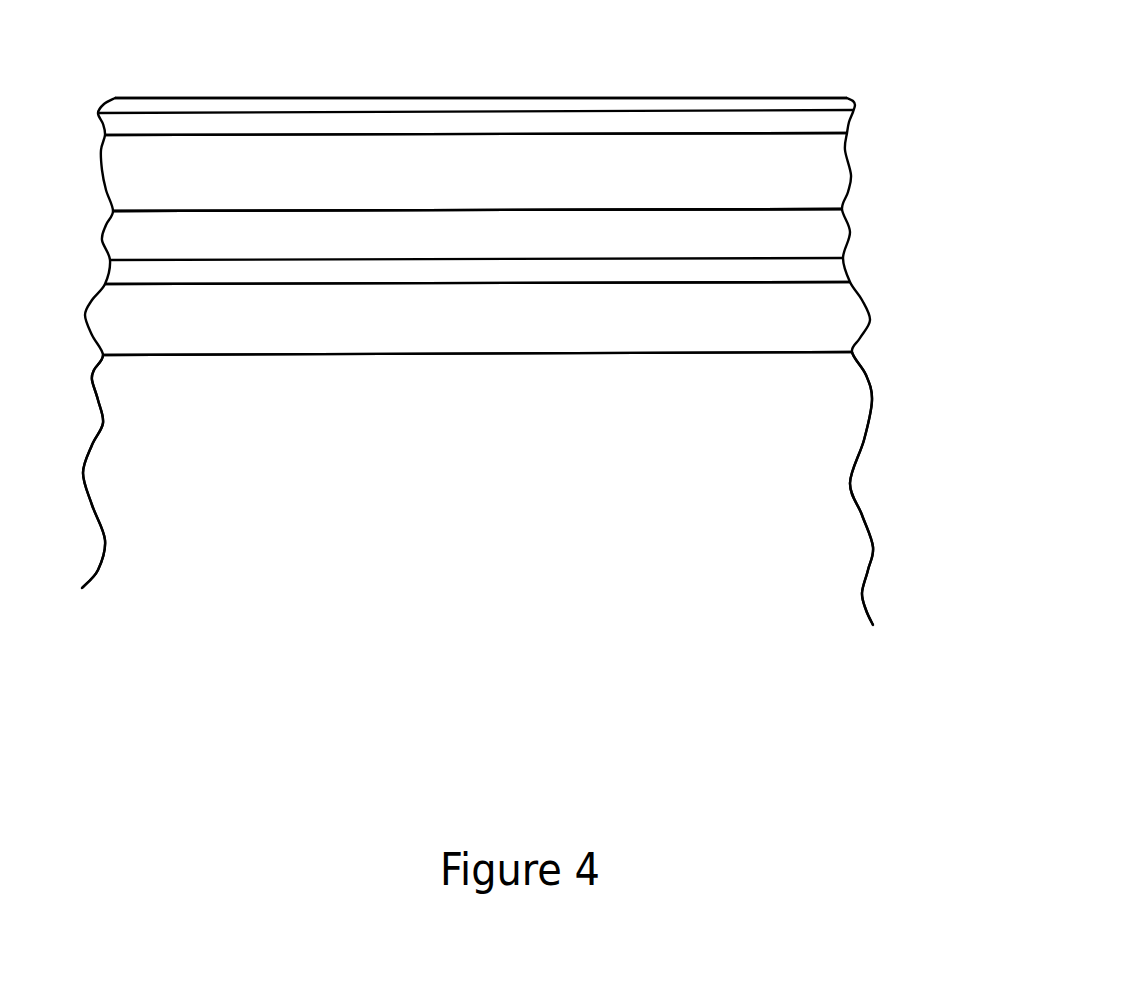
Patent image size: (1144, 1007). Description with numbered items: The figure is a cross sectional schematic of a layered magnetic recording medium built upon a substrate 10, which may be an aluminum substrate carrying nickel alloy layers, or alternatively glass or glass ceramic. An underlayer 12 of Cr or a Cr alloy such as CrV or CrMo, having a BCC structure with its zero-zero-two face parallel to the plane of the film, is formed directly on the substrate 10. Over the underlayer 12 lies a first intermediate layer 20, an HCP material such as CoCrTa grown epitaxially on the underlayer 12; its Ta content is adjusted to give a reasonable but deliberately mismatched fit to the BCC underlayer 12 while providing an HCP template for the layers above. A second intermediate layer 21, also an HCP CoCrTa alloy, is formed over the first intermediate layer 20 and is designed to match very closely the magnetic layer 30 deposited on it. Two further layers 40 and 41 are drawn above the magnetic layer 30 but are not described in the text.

The substrate 10 is at (487, 534).
The underlayer 12 is at (875, 327).
The intermediate layer 20 is at (857, 267).
The second intermediate layer 21 is at (857, 222).
The magnetic layer 30 is at (857, 183).
The fourth layer 40 is at (857, 122).
The top coating layer 41 is at (857, 102).